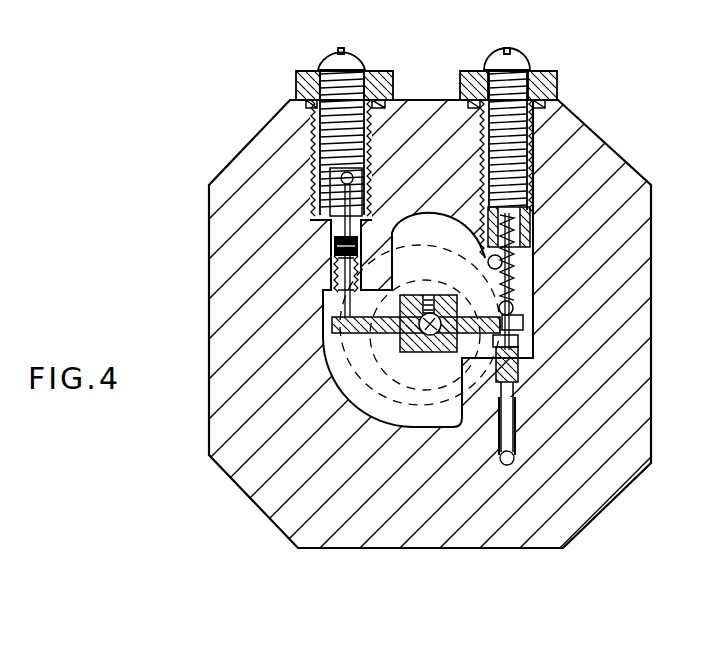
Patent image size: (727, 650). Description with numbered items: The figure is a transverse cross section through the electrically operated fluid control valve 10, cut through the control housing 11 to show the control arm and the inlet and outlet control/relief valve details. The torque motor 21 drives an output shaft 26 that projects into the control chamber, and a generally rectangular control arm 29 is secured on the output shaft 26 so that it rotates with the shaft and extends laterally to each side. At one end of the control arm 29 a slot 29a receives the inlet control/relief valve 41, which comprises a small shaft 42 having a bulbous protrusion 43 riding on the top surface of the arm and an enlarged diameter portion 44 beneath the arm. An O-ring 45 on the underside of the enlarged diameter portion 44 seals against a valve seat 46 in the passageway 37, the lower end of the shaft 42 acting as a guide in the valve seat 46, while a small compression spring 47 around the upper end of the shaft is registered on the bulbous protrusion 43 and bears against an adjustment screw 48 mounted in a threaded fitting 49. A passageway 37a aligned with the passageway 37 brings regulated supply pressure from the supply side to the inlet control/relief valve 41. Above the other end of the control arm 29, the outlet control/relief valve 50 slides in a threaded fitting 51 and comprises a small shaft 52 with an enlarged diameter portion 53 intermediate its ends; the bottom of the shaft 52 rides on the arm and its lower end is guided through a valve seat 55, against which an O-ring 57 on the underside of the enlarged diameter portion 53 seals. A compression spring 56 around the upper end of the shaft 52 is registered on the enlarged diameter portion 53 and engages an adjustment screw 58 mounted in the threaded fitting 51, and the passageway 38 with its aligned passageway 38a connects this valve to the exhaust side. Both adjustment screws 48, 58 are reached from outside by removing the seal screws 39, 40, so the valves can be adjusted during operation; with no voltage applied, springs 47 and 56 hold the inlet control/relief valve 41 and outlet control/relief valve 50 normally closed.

The fluid control valve 10 is at (192, 262).
The control housing 11 is at (655, 317).
The torque motor 21 is at (444, 216).
The output shaft 26 is at (435, 352).
The control arm 29 is at (398, 334).
The slot 29a is at (525, 322).
The passageway 37 is at (505, 565).
The passageway 37a is at (545, 519).
The passageway 38 is at (318, 195).
The passageway 38a is at (279, 158).
The seal screw 39 is at (516, 55).
The seal screw 40 is at (352, 56).
The inlet control/relief valve 41 is at (527, 274).
The shaft 42 is at (520, 226).
The bulbous protrusion 43 is at (513, 308).
The enlarged diameter portion 44 is at (518, 341).
The O-ring 45 is at (519, 362).
The valve seat 46 is at (513, 378).
The compression spring 47 is at (510, 262).
The adjustment screw 48 is at (515, 132).
The threaded fitting 49 is at (556, 85).
The outlet control/relief valve 50 is at (322, 224).
The threaded fitting 51 is at (300, 82).
The shaft 52 is at (322, 197).
The enlarged diameter portion 53 is at (326, 251).
The valve seat 55 is at (332, 283).
The compression spring 56 is at (362, 238).
The O-ring 57 is at (338, 262).
The adjustment screw 58 is at (360, 103).